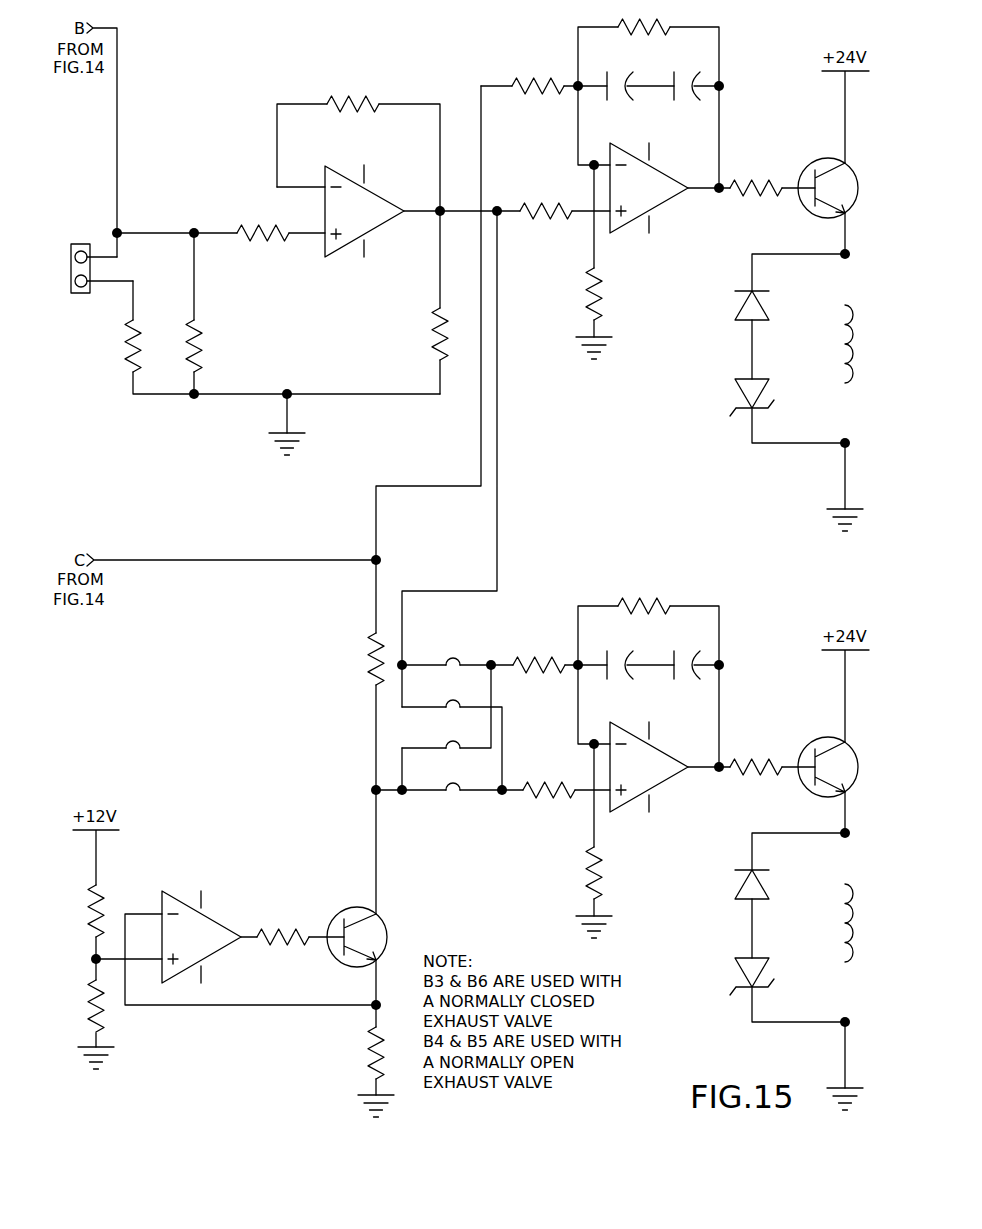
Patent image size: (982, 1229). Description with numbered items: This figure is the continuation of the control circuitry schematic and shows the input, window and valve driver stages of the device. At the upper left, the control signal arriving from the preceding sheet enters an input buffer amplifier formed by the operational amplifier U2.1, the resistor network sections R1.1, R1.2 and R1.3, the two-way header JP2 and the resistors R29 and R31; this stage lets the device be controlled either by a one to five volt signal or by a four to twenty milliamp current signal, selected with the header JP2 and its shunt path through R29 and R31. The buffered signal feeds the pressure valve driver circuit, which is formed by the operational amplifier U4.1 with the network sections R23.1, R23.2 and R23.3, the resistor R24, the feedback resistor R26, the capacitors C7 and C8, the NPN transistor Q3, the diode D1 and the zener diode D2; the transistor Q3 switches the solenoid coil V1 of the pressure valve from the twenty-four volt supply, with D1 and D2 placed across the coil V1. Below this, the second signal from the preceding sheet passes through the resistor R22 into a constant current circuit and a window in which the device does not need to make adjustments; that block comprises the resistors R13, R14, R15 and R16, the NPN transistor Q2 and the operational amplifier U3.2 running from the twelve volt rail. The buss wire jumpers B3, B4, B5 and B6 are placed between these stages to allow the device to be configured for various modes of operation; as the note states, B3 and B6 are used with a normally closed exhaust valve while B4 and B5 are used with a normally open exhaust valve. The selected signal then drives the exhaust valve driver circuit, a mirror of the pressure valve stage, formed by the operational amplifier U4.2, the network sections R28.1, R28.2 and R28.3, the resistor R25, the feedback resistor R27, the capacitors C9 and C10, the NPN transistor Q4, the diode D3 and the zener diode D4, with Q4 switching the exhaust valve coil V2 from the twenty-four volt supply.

The two-way header JP2 is at (99, 259).
The resistor R29 is at (114, 346).
The resistor R31 is at (211, 346).
The resistor network element R1.1 is at (263, 224).
The resistor network element R1.2 is at (358, 145).
The resistor network element R1.3 is at (420, 302).
The operational amplifier U2.1 is at (340, 199).
The resistor network element R23.1 is at (565, 201).
The resistor network element R23.2 is at (529, 77).
The resistor network element R23.3 is at (772, 179).
The resistor R26 is at (648, 95).
The capacitor C7 is at (626, 73).
The capacitor C8 is at (694, 73).
The operational amplifier U4.1 is at (649, 176).
The resistor R24 is at (581, 313).
The NPN transistor Q3 is at (828, 192).
The diode D1 is at (736, 308).
The zener diode D2 is at (739, 397).
The valve solenoid coil V1 is at (835, 344).
The resistor R22 is at (357, 773).
The buss wire jumper B3 is at (457, 652).
The buss wire jumper B4 is at (452, 736).
The buss wire jumper B5 is at (446, 706).
The buss wire jumper B6 is at (449, 777).
The resistor network element R28.1 is at (566, 780).
The resistor network element R28.2 is at (545, 656).
The resistor network element R28.3 is at (772, 758).
The resistor R27 is at (648, 674).
The capacitor C9 is at (626, 652).
The capacitor C10 is at (692, 652).
The operational amplifier U4.2 is at (649, 755).
The resistor R25 is at (581, 892).
The NPN transistor Q4 is at (828, 771).
The diode D3 is at (736, 887).
The zener diode D4 is at (739, 976).
The valve solenoid coil V2 is at (835, 923).
The resistor R13 is at (77, 911).
The resistor R14 is at (77, 1006).
The operational amplifier U3.2 is at (201, 925).
The resistor R15 is at (300, 927).
The NPN transistor Q2 is at (357, 954).
The resistor R16 is at (362, 1072).